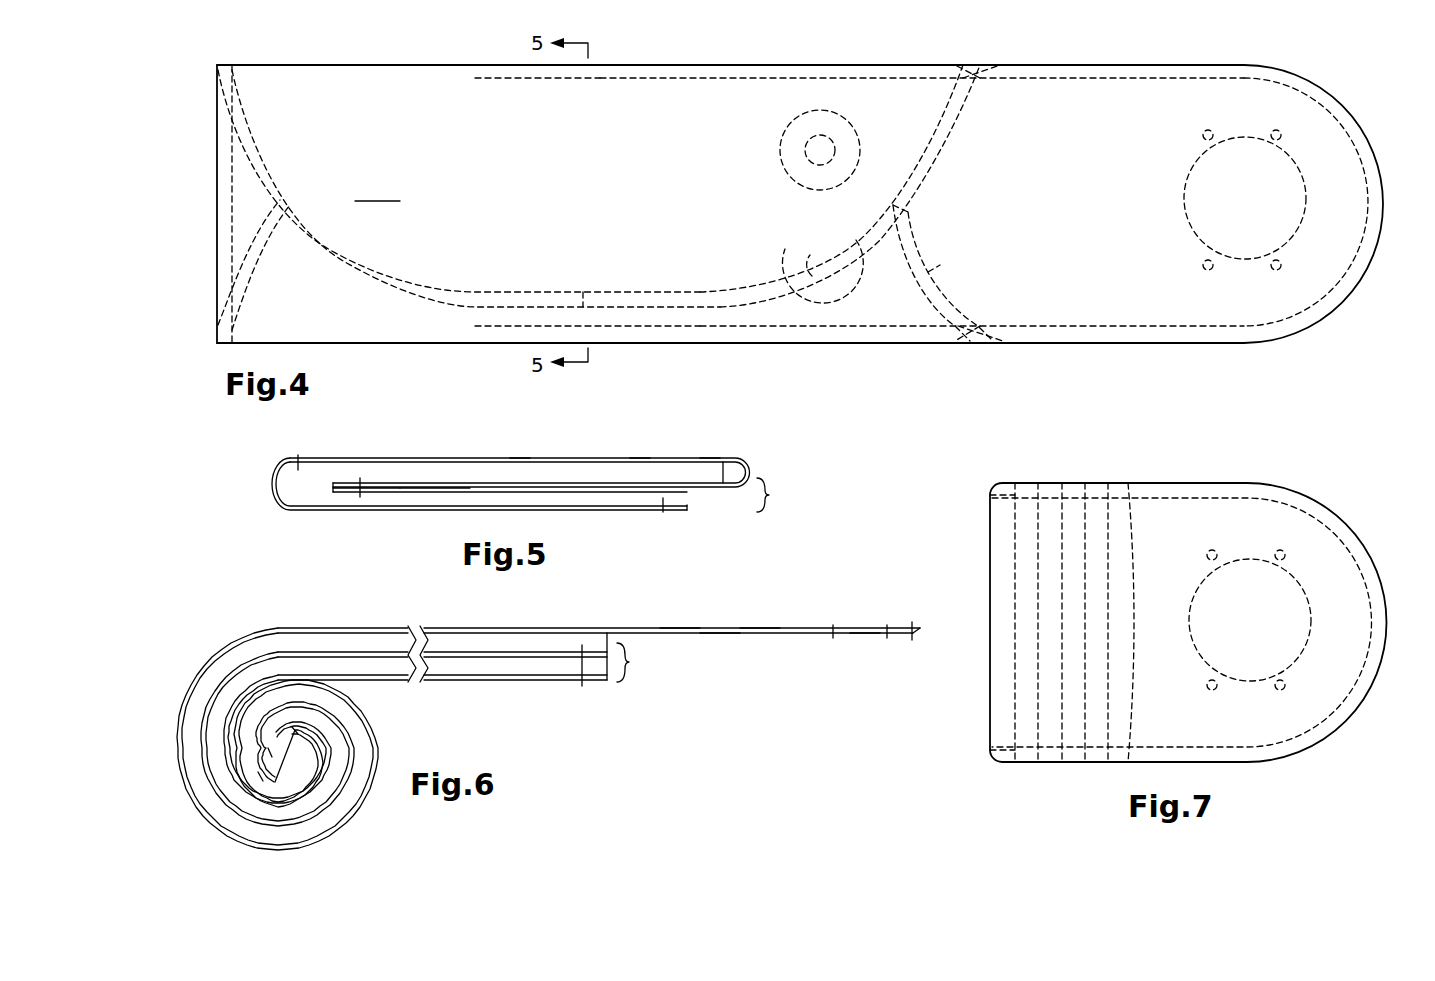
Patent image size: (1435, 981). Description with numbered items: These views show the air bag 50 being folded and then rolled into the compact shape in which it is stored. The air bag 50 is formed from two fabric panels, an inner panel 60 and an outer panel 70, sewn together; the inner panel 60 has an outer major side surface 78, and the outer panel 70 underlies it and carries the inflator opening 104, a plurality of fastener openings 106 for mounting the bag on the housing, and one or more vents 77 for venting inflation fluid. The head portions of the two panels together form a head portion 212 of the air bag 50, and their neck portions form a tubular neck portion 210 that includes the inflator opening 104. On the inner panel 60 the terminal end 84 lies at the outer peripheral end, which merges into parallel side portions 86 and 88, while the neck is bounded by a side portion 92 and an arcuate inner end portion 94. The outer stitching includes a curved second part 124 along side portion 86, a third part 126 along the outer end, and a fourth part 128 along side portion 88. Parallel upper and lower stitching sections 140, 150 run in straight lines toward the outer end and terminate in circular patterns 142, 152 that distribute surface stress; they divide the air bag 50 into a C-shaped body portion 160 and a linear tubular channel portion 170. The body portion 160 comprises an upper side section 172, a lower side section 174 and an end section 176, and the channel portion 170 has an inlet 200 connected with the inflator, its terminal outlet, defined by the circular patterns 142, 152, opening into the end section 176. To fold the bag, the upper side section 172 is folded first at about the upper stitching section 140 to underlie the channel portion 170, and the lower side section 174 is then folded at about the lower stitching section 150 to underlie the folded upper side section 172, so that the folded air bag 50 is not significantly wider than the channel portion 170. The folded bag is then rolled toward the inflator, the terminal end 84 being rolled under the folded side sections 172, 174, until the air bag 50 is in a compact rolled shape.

In FIG. 4, the air bag 50 is at (1126, 49).
In FIG. 5, the air bag 50 is at (722, 436).
In FIG. 6, the air bag 50 is at (703, 608).
In FIG. 7, the air bag 50 is at (1351, 496).
In FIG. 4, the inner panel 60 is at (1185, 92).
In FIG. 5, the inner panel 60 is at (420, 458).
In FIG. 6, the inner panel 60 is at (745, 629).
In FIG. 7, the inner panel 60 is at (1072, 556).
In FIG. 5, the outer panel 70 is at (470, 462).
In FIG. 6, the outer panel 70 is at (737, 633).
In FIG. 4, the vents 77 is at (790, 175).
In FIG. 5, the outer major side surface 78 is at (640, 458).
In FIG. 4, the terminal end 84 is at (217, 153).
In FIG. 6, the terminal end 84 is at (275, 781).
In FIG. 4, the side portion 86 is at (583, 305).
In FIG. 5, the side portion 86 is at (345, 492).
In FIG. 5, the side portion 88 is at (683, 508).
In FIG. 4, the side portion 92 is at (1087, 343).
In FIG. 6, the arcuate inner end portion 94 is at (920, 632).
In FIG. 4, the inflator opening 104 is at (1185, 205).
In FIG. 6, the inflator opening 104 is at (862, 636).
In FIG. 7, the inflator opening 104 is at (1190, 617).
In FIG. 4, the fastener openings 106 is at (1206, 131).
In FIG. 7, the fastener openings 106 is at (1282, 682).
In FIG. 4, the curved second part 124 is at (610, 290).
In FIG. 5, the curved second part 124 is at (360, 487).
In FIG. 4, the third part 126 is at (232, 178).
In FIG. 4, the fourth part 128 is at (932, 268).
In FIG. 5, the fourth part 128 is at (662, 510).
In FIG. 4, the upper stitching section 140 is at (748, 78).
In FIG. 5, the upper stitching section 140 is at (723, 470).
In FIG. 4, the circular pattern 142 is at (485, 80).
In FIG. 4, the lower stitching section 150 is at (878, 326).
In FIG. 5, the lower stitching section 150 is at (298, 462).
In FIG. 4, the circular pattern 152 is at (478, 326).
In FIG. 4, the body portion 160 is at (905, 205).
In FIG. 5, the body portion 160 is at (785, 495).
In FIG. 6, the body portion 160 is at (645, 662).
In FIG. 7, the body portion 160 is at (1060, 698).
In FIG. 4, the channel portion 170 is at (1050, 64).
In FIG. 5, the channel portion 170 is at (515, 445).
In FIG. 7, the channel portion 170 is at (1152, 560).
In FIG. 4, the upper side section 172 is at (953, 113).
In FIG. 5, the upper side section 172 is at (402, 488).
In FIG. 6, the upper side section 172 is at (535, 653).
In FIG. 4, the lower side section 174 is at (924, 238).
In FIG. 5, the lower side section 174 is at (458, 505).
In FIG. 6, the lower side section 174 is at (465, 676).
In FIG. 4, the end section 176 is at (377, 190).
In FIG. 4, the inlet 200 is at (1337, 137).
In FIG. 7, the inlet 200 is at (1248, 520).
In FIG. 4, the neck portion 210 is at (1030, 48).
In FIG. 6, the neck portion 210 is at (702, 655).
In FIG. 4, the head portion 212 is at (702, 65).
In FIG. 6, the head portion 212 is at (577, 694).